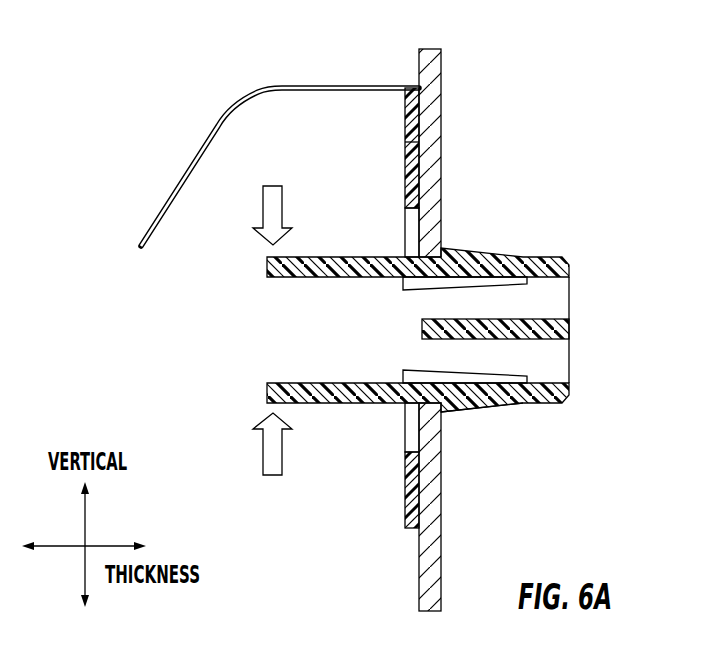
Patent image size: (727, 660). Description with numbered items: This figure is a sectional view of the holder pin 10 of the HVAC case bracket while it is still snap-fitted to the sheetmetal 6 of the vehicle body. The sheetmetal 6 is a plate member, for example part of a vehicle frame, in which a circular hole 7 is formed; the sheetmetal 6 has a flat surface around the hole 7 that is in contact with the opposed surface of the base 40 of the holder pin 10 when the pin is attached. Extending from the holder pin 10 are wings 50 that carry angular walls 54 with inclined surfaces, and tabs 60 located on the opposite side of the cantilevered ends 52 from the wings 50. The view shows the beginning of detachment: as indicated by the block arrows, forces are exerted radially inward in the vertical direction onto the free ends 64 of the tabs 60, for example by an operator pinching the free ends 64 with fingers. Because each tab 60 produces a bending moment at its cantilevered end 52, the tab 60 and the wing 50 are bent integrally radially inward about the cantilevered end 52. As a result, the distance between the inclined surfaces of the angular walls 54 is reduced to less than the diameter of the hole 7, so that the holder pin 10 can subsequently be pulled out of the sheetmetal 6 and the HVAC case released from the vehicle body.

The holder pin 10 is at (168, 108).
The sheetmetal 6 is at (442, 92).
The base 40 is at (411, 530).
The wing 50 is at (389, 368).
The cantilevered end 52 is at (524, 272).
The angular wall 54 is at (488, 406).
The tab 60 is at (244, 397).
The free end 64 is at (267, 267).
The circular hole 7 is at (444, 413).